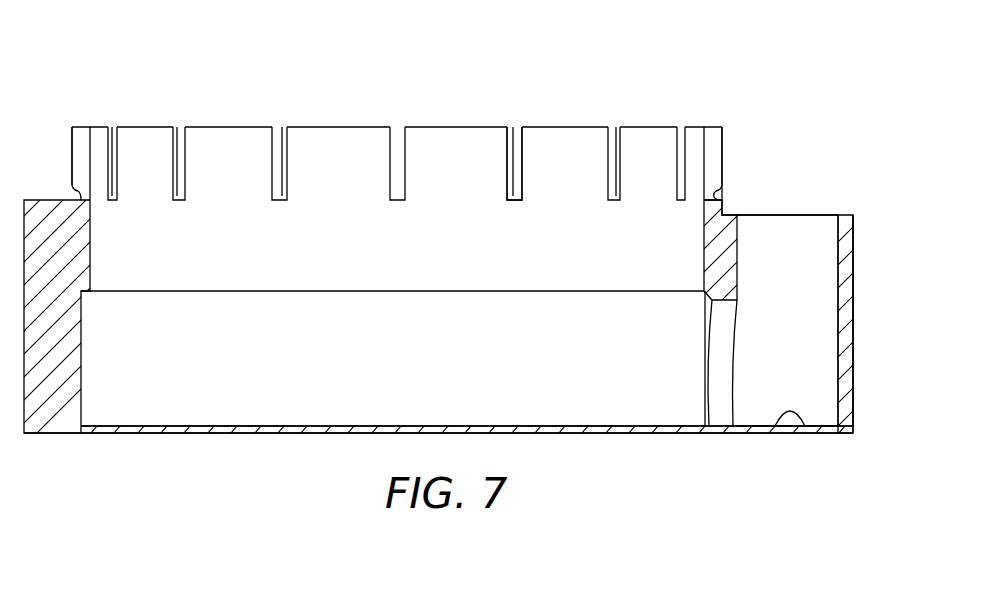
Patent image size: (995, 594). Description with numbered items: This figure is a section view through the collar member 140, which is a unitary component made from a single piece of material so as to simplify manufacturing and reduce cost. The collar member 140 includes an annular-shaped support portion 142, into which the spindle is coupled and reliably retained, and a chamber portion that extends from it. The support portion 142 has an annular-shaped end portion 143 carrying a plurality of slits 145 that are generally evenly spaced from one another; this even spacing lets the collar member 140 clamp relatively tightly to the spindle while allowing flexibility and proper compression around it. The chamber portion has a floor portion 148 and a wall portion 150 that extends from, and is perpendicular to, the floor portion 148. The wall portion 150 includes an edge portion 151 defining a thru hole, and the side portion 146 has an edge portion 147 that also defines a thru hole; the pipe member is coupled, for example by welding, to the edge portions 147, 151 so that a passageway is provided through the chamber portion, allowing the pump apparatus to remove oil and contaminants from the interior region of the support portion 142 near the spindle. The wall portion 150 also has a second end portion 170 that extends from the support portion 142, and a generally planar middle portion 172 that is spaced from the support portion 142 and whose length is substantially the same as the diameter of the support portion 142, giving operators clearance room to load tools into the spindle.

The collar member 140 is at (736, 96).
The support portion 142 is at (137, 232).
The end portion 143 is at (323, 146).
The slits 145 is at (400, 136).
The side portion 146 is at (712, 252).
The edge portion 147 is at (712, 350).
The floor portion 148 is at (786, 426).
The wall portion 150 is at (765, 242).
The edge portion 151 is at (846, 330).
The second end portion 170 is at (747, 230).
The middle portion 172 is at (850, 231).